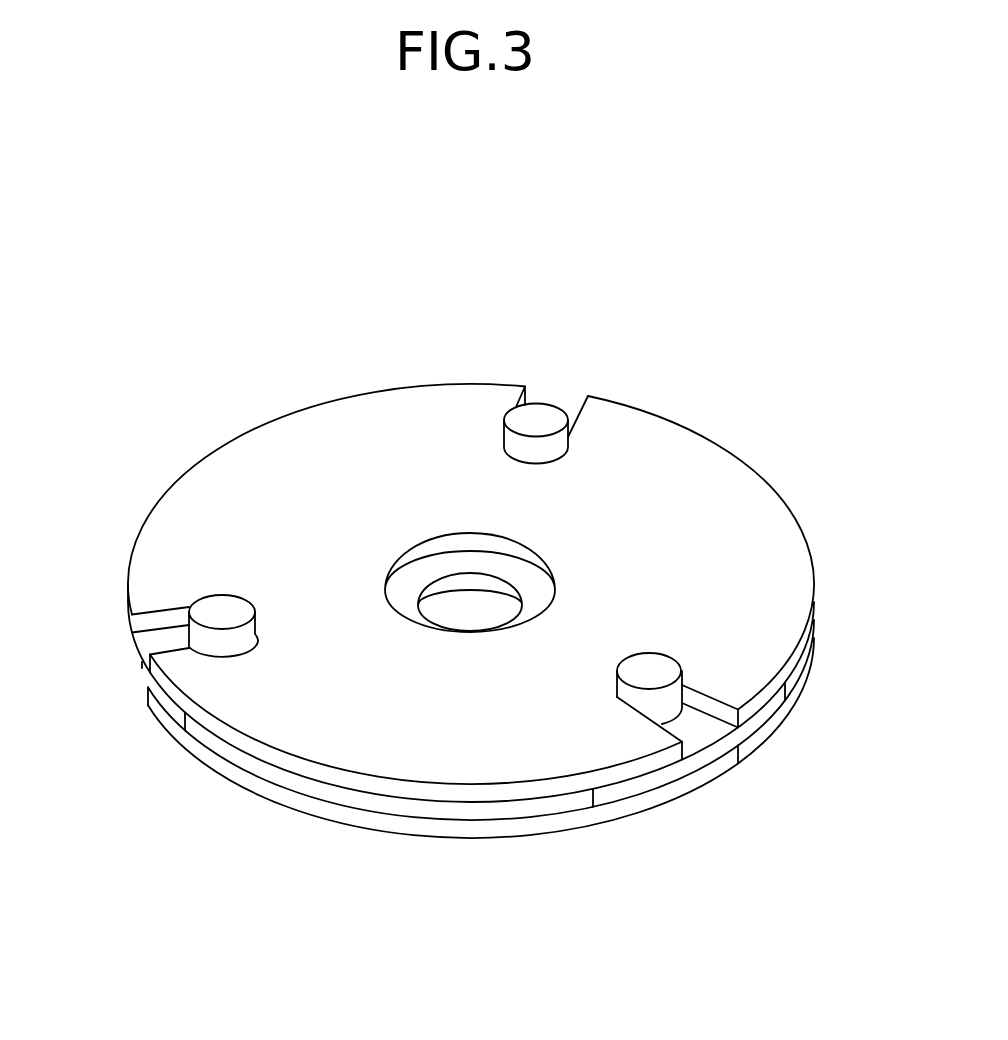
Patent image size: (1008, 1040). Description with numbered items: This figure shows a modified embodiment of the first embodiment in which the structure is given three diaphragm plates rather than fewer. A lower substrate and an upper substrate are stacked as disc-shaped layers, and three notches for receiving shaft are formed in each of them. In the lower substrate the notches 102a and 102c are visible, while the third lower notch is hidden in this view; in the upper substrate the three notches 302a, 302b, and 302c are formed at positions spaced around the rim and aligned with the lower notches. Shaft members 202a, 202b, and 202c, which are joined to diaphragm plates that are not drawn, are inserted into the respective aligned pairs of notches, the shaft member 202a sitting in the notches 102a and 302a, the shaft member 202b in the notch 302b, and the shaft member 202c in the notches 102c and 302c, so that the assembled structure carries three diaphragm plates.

The notch for receiving shaft 102a is at (722, 748).
The notch for receiving shaft 102c is at (142, 668).
The shaft member 202a is at (662, 676).
The shaft member 202b is at (528, 418).
The shaft member 202c is at (217, 606).
The notch for receiving shaft 302a is at (713, 705).
The notch for receiving shaft 302b is at (582, 426).
The notch for receiving shaft 302c is at (164, 622).